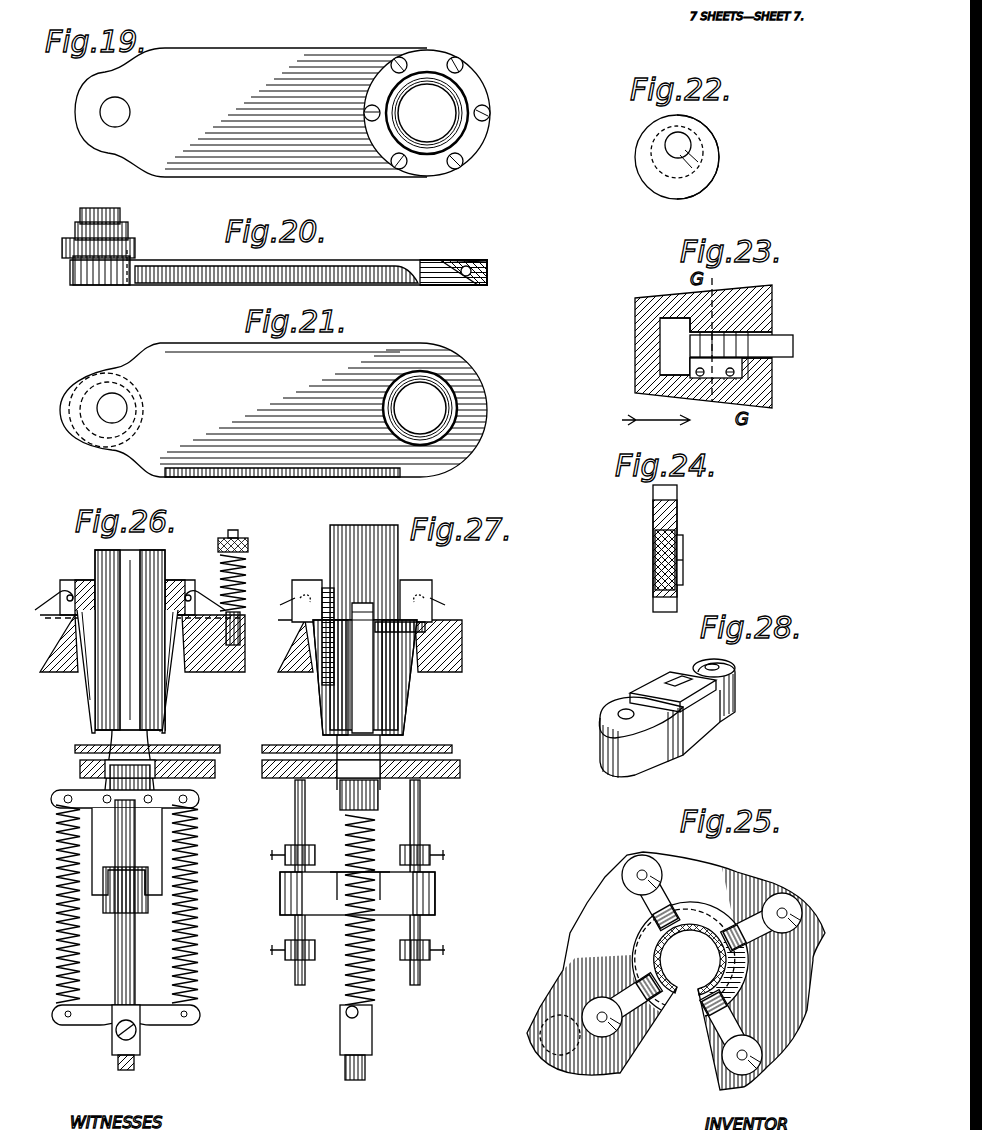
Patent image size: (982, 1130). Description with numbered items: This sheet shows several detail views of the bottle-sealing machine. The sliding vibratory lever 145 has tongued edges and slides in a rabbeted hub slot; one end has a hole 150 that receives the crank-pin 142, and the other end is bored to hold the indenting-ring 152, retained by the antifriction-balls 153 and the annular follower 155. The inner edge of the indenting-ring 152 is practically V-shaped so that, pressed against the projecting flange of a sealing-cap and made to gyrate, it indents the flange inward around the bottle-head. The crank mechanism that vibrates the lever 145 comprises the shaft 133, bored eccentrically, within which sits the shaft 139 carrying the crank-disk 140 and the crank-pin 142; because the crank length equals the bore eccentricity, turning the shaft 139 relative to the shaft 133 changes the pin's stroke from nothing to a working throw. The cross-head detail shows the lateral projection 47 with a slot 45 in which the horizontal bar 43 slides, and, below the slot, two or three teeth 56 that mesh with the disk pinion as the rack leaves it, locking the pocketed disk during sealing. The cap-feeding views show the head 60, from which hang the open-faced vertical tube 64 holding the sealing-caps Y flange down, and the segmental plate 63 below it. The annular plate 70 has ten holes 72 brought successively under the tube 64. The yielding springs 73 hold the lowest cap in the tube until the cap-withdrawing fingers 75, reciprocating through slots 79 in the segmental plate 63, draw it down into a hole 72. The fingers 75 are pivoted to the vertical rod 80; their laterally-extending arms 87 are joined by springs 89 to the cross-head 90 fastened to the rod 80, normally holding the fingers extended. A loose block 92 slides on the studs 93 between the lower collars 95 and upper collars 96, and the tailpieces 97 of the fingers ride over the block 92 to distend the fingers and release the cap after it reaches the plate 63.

In FIG. 19, the shaft 139 is at (105, 193).
In FIG. 20, the shaft 139 is at (100, 216).
In FIG. 20, the shaft 133 is at (120, 226).
In FIG. 22, the shaft 133 is at (719, 157).
In FIG. 20, the crank-disk 140 is at (135, 250).
In FIG. 22, the crank-disk 140 is at (650, 175).
In FIG. 20, the crank-pin 142 is at (105, 286).
In FIG. 22, the crank-pin 142 is at (665, 143).
In FIG. 19, the lever 145 is at (163, 142).
In FIG. 20, the lever 145 is at (345, 260).
In FIG. 21, the lever 145 is at (273, 410).
In FIG. 19, the hole 150 is at (130, 116).
In FIG. 21, the hole 150 is at (127, 408).
In FIG. 19, the indenting-ring 152 is at (455, 92).
In FIG. 20, the indenting-ring 152 is at (450, 262).
In FIG. 21, the indenting-ring 152 is at (458, 392).
In FIG. 20, the antifriction-balls 153 is at (460, 286).
In FIG. 19, the annular follower 155 is at (472, 143).
In FIG. 20, the annular follower 155 is at (490, 262).
In FIG. 23, the horizontal bar 43 is at (782, 345).
In FIG. 24, the horizontal bar 43 is at (655, 548).
In FIG. 23, the slot 45 is at (690, 330).
In FIG. 23, the lateral projection 47 is at (638, 352).
In FIG. 24, the lateral projection 47 is at (680, 518).
In FIG. 23, the teeth 56 is at (745, 370).
In FIG. 24, the teeth 56 is at (684, 575).
In FIG. 25, the head 60 is at (760, 880).
In FIG. 26, the head 60 is at (141, 601).
In FIG. 27, the head 60 is at (462, 645).
In FIG. 26, the segmental plate 63 is at (190, 782).
In FIG. 27, the segmental plate 63 is at (460, 770).
In FIG. 25, the open-faced vertical tube 64 is at (660, 955).
In FIG. 26, the open-faced vertical tube 64 is at (165, 563).
In FIG. 27, the open-faced vertical tube 64 is at (377, 629).
In FIG. 26, the annular plate 70 is at (205, 745).
In FIG. 27, the annular plate 70 is at (425, 748).
In FIG. 26, the holes 72 is at (155, 742).
In FIG. 27, the holes 72 is at (395, 745).
In FIG. 25, the yielding springs 73 is at (665, 1047).
In FIG. 26, the yielding springs 73 is at (190, 695).
In FIG. 27, the yielding springs 73 is at (410, 700).
In FIG. 26, the cap-withdrawing fingers 75 is at (110, 768).
In FIG. 27, the cap-withdrawing fingers 75 is at (378, 790).
In FIG. 26, the slots 79 is at (195, 805).
In FIG. 27, the slots 79 is at (300, 782).
In FIG. 26, the vertical rod 80 is at (136, 945).
In FIG. 27, the vertical rod 80 is at (375, 975).
In FIG. 26, the laterally-extending arms 87 is at (160, 878).
In FIG. 26, the springs 89 is at (194, 905).
In FIG. 26, the cross-head 90 is at (150, 1018).
In FIG. 27, the cross-head 90 is at (372, 1030).
In FIG. 28, the loose block 92 is at (705, 735).
In FIG. 26, the loose block 92 is at (113, 933).
In FIG. 27, the loose block 92 is at (435, 890).
In FIG. 27, the studs 93 is at (290, 985).
In FIG. 27, the lower adjustable collars 95 is at (428, 960).
In FIG. 27, the upper adjustable collars 96 is at (435, 845).
In FIG. 26, the tailpieces 97 is at (165, 885).
In FIG. 27, the tailpieces 97 is at (430, 915).
In FIG. 26, the sealing-caps Y is at (85, 720).